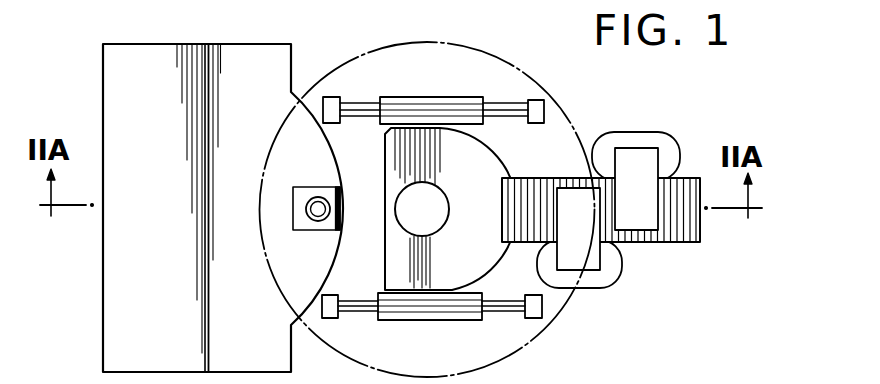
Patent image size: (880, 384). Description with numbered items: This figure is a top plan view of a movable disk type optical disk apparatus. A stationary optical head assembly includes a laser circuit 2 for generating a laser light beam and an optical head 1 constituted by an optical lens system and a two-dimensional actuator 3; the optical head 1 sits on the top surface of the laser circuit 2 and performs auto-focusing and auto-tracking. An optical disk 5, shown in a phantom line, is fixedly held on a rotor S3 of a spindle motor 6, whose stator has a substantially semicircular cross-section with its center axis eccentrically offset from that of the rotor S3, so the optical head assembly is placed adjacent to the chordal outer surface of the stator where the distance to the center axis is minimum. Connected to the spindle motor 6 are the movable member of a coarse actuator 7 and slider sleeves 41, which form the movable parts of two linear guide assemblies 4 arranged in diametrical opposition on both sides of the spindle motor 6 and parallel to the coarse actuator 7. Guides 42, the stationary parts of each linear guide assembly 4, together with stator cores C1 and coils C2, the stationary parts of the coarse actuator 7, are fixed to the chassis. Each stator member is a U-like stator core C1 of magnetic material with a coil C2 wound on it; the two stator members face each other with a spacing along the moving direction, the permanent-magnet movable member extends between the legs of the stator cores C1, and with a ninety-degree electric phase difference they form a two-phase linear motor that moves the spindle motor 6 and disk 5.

The optical head 1 is at (312, 198).
The laser circuit 2 is at (209, 44).
The two-dimensional actuator 3 is at (301, 232).
The linear guide assembly 4 is at (397, 89).
The slider sleeve 41 is at (452, 103).
The guide 42 is at (502, 100).
The optical disk 5 is at (443, 43).
The spindle motor 6 is at (476, 263).
The rotor S3 is at (440, 210).
The coarse actuator 7 is at (647, 244).
The stator core C1 is at (626, 156).
The coil C2 is at (660, 148).